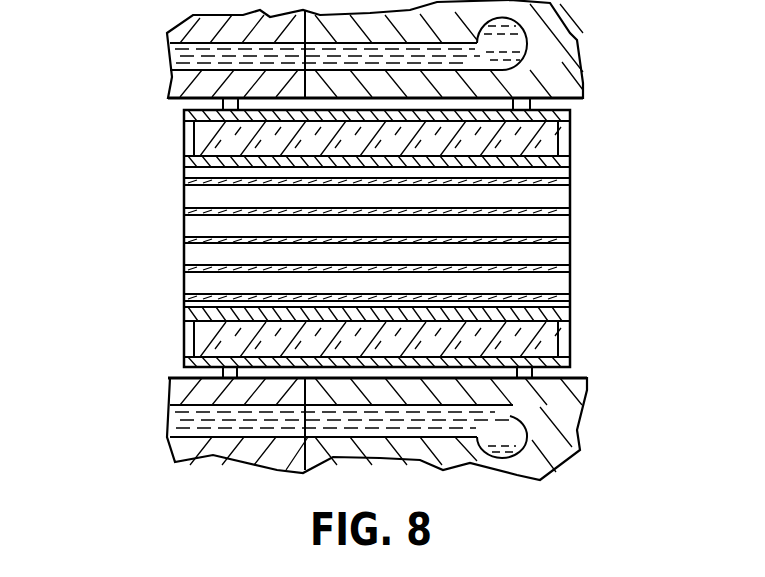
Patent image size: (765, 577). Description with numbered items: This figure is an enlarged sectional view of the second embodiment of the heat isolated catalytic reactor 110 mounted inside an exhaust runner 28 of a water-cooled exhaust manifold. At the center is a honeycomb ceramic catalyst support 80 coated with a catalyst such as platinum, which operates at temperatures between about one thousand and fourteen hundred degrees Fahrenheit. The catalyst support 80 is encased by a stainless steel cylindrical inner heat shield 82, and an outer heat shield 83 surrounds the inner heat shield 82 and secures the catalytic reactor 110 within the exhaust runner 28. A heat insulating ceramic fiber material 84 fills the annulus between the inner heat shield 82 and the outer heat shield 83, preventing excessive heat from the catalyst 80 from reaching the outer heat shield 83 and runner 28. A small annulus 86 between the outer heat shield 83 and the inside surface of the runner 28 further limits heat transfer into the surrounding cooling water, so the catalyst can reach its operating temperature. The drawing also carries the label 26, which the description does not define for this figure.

The upper bearing plate with fluid channel 110 is at (125, 69).
The lower bearing plate with fluid channel 28 is at (175, 452).
The piezoelectric transducer stack 26 is at (174, 212).
The upper end cap / insulating frame 84 is at (192, 137).
The upper electrode plate 82 is at (572, 141).
The piezoelectric ceramic layers 80 is at (570, 225).
The lower end cap / insulating frame 83 is at (192, 373).
The lower electrode plate 86 is at (500, 371).